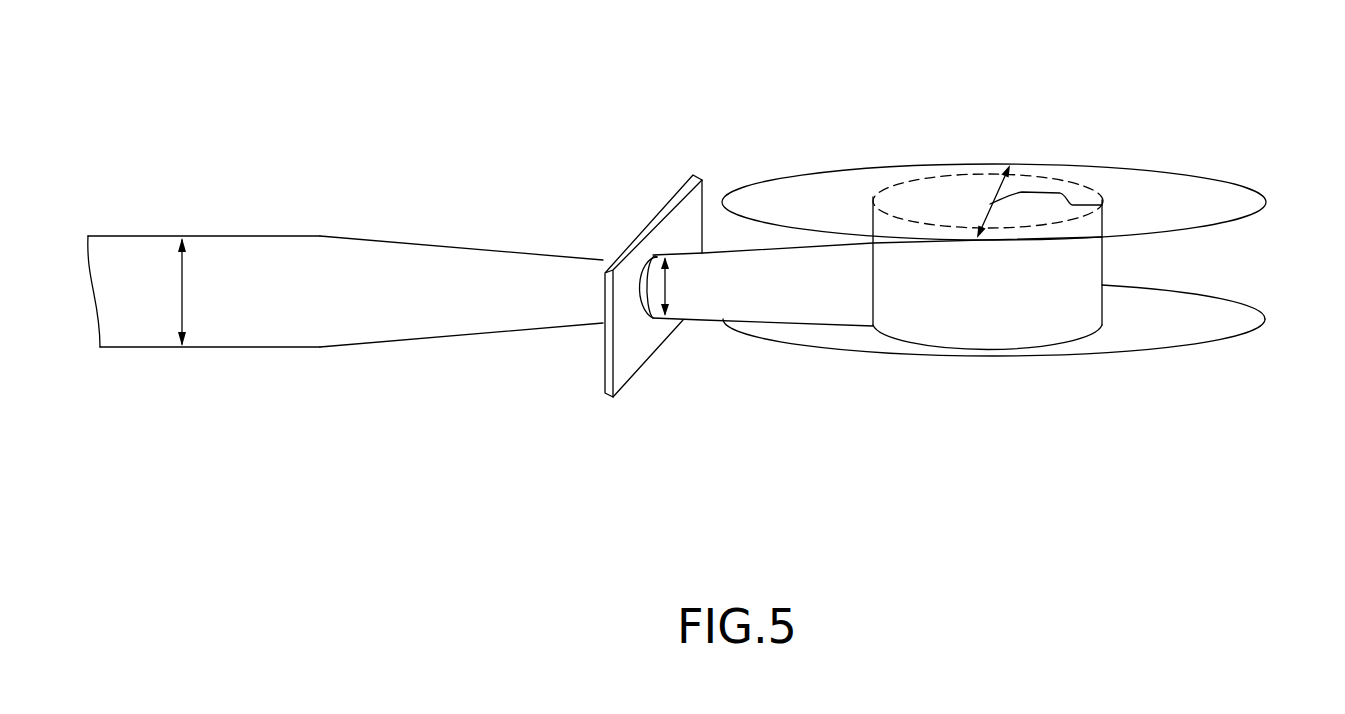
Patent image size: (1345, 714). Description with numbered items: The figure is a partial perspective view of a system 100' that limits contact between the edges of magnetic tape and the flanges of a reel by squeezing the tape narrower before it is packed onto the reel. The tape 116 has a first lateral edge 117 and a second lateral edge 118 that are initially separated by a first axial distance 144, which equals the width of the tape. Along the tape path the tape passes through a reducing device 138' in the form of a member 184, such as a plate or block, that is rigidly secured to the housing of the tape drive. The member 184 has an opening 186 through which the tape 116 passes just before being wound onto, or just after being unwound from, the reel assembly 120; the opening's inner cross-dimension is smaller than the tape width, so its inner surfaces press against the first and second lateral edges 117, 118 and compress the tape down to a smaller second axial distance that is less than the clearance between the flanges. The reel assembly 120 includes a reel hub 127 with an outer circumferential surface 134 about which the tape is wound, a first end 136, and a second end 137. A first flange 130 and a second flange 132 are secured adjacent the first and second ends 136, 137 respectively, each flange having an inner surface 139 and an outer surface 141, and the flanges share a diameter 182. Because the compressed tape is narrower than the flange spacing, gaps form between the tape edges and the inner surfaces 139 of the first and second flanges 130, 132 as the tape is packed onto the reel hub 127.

The system 100' is at (345, 347).
The tape 116 is at (345, 257).
The first lateral edge 117 is at (480, 243).
The second lateral edge 118 is at (412, 340).
The first axial distance 144 is at (182, 288).
The member 184 is at (620, 372).
The opening 186 is at (657, 267).
The reducing device 138' is at (675, 426).
The reel assembly 120 is at (1044, 154).
The first flange 130 is at (1193, 190).
The second flange 132 is at (1180, 313).
The reel hub 127 is at (1090, 303).
The first end 136 is at (963, 187).
The diameter 182 is at (1102, 205).
The outer circumferential surface 134 is at (1102, 268).
The second end 137 is at (1030, 343).
The inner surface 139 is at (1245, 218).
The outer surface 141 is at (1247, 195).